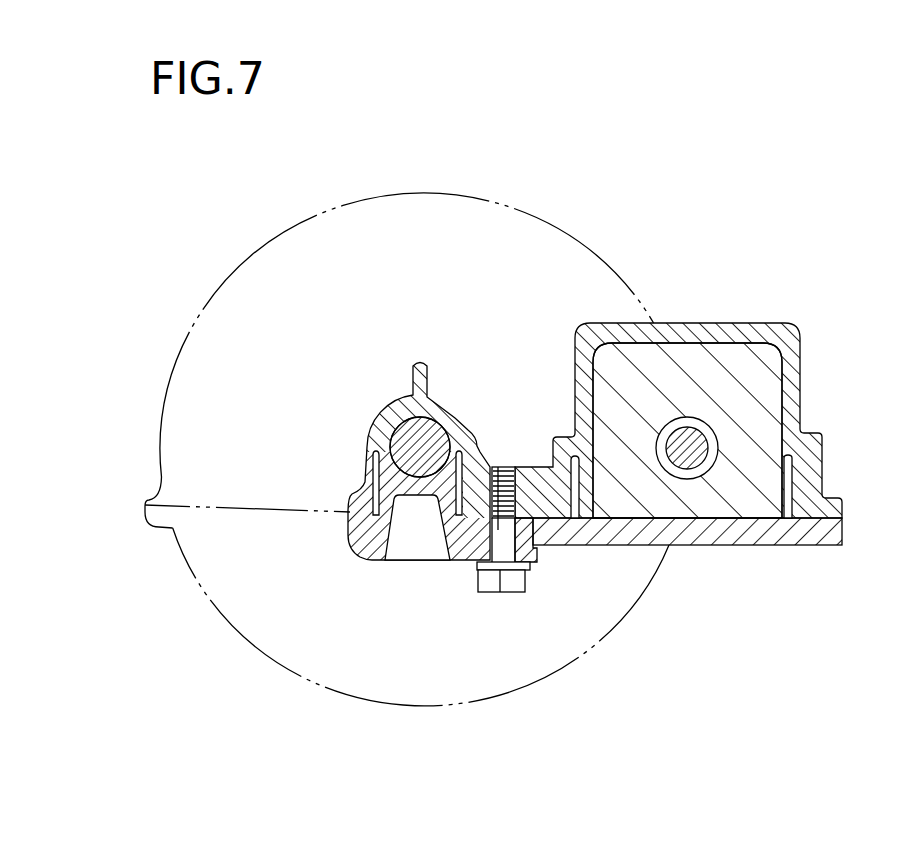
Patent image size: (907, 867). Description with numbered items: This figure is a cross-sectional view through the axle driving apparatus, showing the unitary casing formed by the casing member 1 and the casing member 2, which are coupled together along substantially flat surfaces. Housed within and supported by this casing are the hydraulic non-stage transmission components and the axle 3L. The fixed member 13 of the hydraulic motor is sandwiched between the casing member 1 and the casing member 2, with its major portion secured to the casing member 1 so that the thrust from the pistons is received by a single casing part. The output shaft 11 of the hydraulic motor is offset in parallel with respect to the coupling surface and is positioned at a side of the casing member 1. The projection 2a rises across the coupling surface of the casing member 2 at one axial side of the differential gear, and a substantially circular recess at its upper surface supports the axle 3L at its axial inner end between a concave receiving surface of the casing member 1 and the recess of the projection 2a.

The casing member 1 is at (548, 223).
The casing member 2 is at (773, 545).
The projection 2a is at (413, 495).
The axle 3L is at (380, 413).
The output shaft 11 is at (713, 440).
The fixed member 13 is at (706, 342).